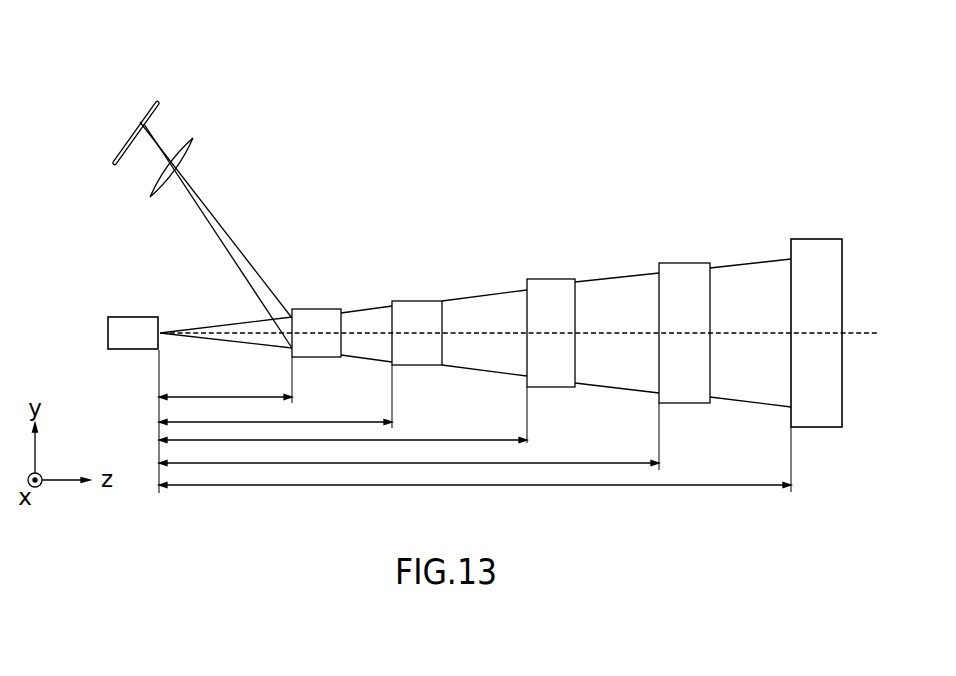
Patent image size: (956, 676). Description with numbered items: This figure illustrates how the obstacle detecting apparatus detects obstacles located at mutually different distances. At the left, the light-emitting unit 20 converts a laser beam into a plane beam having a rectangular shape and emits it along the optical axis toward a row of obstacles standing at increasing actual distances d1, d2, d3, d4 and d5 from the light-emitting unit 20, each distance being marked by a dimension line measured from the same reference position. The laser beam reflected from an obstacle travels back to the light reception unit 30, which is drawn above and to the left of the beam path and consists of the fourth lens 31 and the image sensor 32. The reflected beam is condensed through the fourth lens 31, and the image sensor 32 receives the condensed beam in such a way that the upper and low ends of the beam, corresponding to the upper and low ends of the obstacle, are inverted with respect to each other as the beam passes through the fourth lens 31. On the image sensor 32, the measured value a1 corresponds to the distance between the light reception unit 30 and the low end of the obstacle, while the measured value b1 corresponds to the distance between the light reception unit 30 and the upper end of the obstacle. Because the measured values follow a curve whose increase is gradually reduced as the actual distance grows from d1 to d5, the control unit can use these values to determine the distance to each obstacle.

The light-emitting unit 20 is at (133, 315).
The light reception unit 30 is at (185, 102).
The fourth lens 31 is at (193, 136).
The image sensor 32 is at (157, 101).
The measured value a1 is at (140, 120).
The measured value b1 is at (138, 127).
The actual distance d1 is at (225, 383).
The actual distance d2 is at (275, 406).
The actual distance d3 is at (343, 426).
The actual distance d4 is at (409, 450).
The actual distance d5 is at (475, 471).